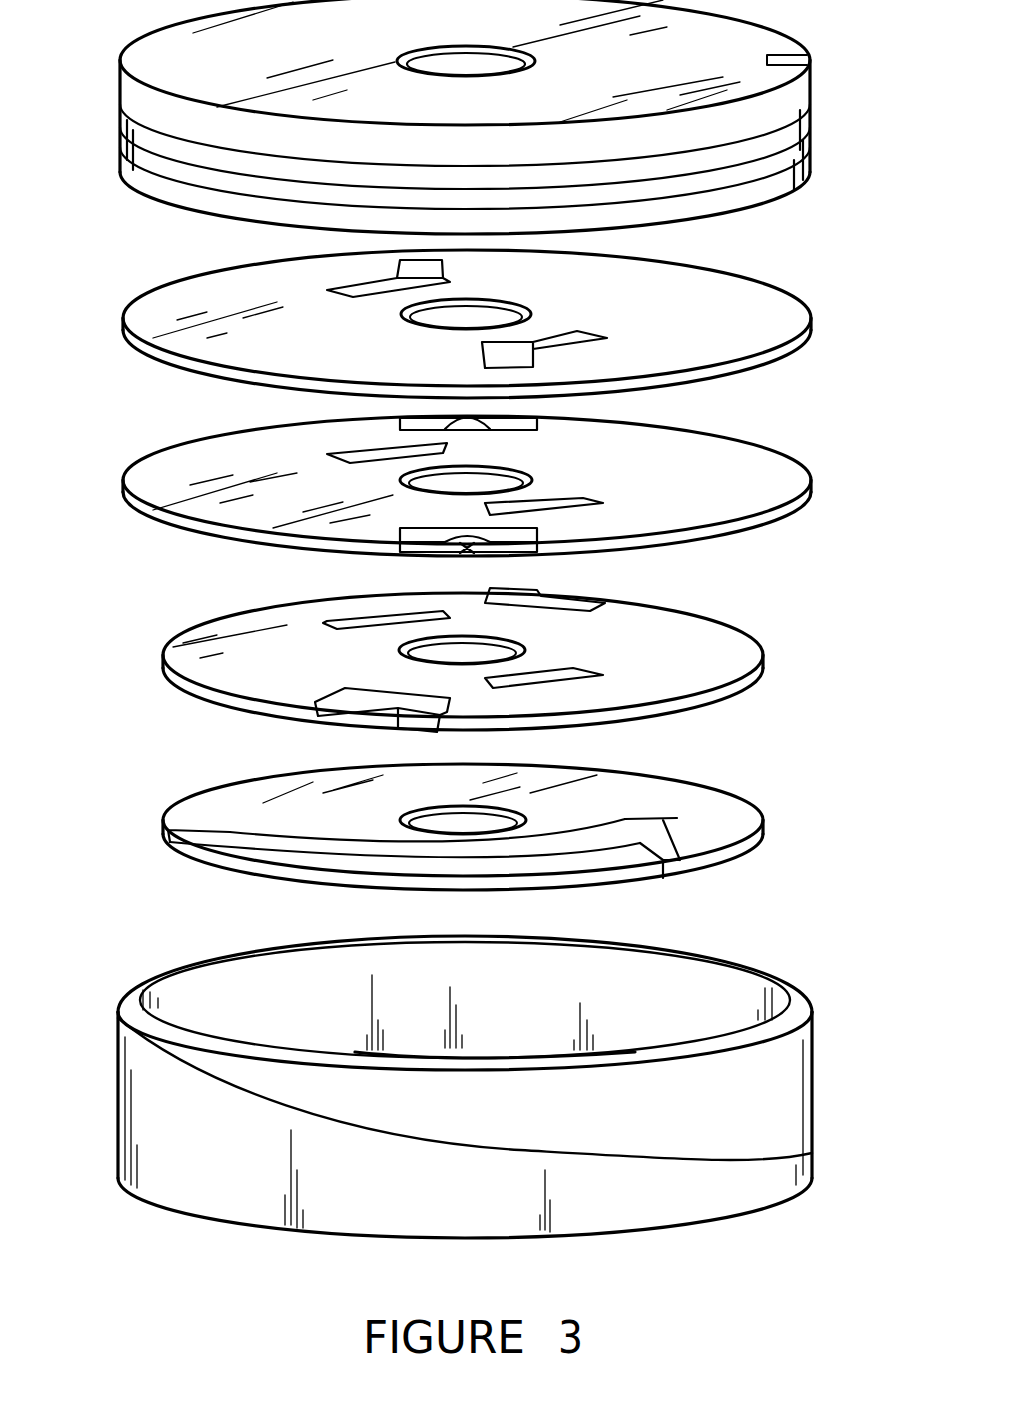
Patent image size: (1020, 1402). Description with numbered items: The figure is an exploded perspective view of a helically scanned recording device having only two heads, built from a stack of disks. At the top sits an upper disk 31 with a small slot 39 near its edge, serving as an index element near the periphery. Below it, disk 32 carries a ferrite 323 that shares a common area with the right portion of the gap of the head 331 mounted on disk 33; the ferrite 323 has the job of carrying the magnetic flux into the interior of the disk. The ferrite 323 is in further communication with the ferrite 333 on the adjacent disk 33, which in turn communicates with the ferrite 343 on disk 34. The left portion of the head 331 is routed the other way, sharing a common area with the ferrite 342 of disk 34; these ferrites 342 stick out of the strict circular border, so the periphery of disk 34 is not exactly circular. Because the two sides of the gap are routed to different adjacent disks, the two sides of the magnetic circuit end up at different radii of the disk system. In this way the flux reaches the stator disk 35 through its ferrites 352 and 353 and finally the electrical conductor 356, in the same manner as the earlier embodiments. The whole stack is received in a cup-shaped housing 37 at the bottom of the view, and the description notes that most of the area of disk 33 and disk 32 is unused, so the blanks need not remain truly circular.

The top disc / upper housing 31 is at (815, 135).
The slot in top disc 39 is at (808, 57).
The disk 32 is at (814, 322).
The ferrite 323 is at (330, 291).
The disk 33 is at (814, 486).
The head 331 is at (540, 428).
The ferrite 333 is at (330, 455).
The disk 34 is at (766, 655).
The ferrites 342 is at (590, 612).
The ferrite 343 is at (325, 622).
The stator disk 35 is at (767, 830).
The ferrite 352 is at (196, 864).
The ferrite 353 is at (670, 842).
The electrical conductor 356 is at (292, 852).
The cup-shaped housing 37 is at (814, 1093).